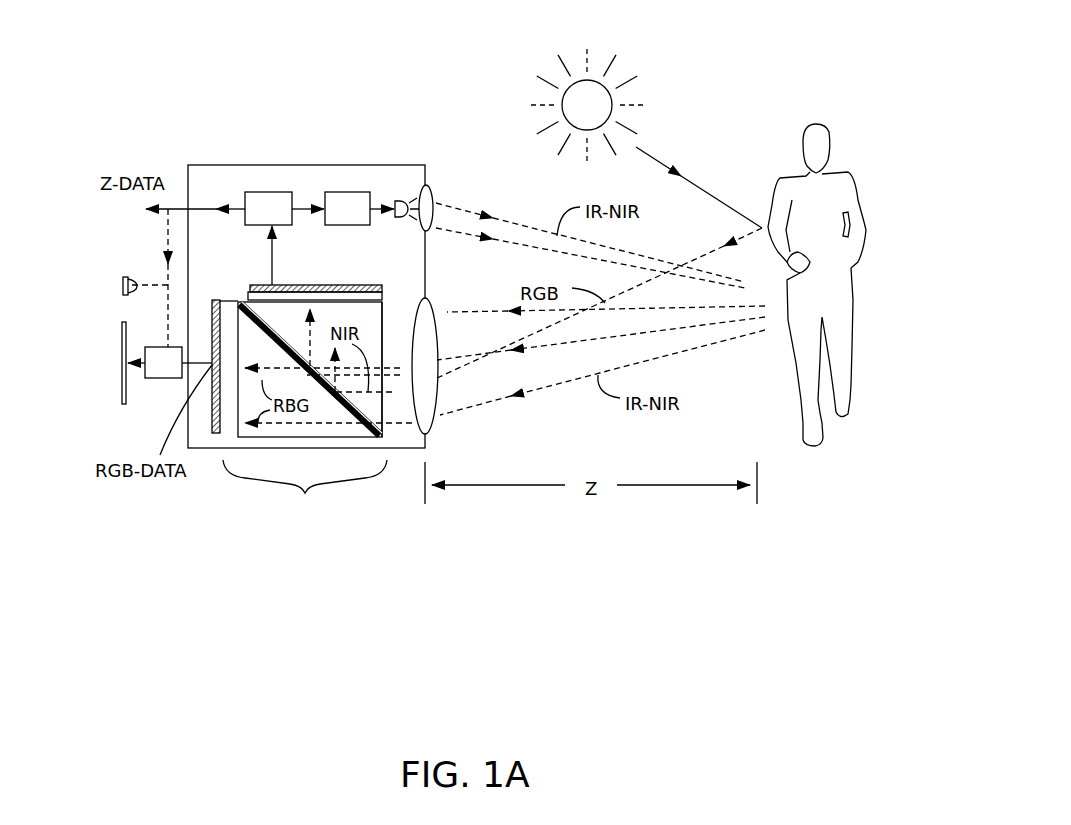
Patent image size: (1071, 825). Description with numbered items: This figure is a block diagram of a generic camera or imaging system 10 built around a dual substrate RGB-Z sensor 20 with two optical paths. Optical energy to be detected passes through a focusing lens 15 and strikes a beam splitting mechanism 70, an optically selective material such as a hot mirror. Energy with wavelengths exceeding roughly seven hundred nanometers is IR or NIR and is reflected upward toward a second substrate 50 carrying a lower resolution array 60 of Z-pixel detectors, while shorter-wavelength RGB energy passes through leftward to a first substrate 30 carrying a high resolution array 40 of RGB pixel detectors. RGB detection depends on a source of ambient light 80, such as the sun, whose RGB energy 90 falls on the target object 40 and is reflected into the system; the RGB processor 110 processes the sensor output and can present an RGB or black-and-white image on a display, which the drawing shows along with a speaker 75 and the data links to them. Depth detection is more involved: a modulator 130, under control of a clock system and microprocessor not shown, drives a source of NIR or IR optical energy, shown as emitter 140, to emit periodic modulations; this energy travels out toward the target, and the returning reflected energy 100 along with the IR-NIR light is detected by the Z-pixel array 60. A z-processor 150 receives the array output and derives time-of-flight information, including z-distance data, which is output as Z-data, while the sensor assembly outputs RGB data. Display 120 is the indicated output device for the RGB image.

The imaging system 10 is at (315, 158).
The focusing lens 15 is at (433, 305).
The RGB-Z sensor 20 is at (305, 497).
The first substrate 30 is at (217, 300).
The array of RGB pixel detectors 40 is at (227, 300).
The second substrate 50 is at (318, 284).
The array of Z-pixel detectors 60 is at (384, 298).
The beam splitting mechanism 70 is at (258, 322).
The speaker 75 is at (120, 292).
The source of ambient light 80 is at (587, 105).
The RGB energy 90 is at (646, 152).
The reflected ambient light ray 100 is at (707, 250).
The RGB processor 110 is at (163, 362).
The display 120 is at (119, 347).
The modulator 130 is at (347, 208).
The IR light emitter 140 is at (405, 198).
The z-processor 150 is at (268, 208).